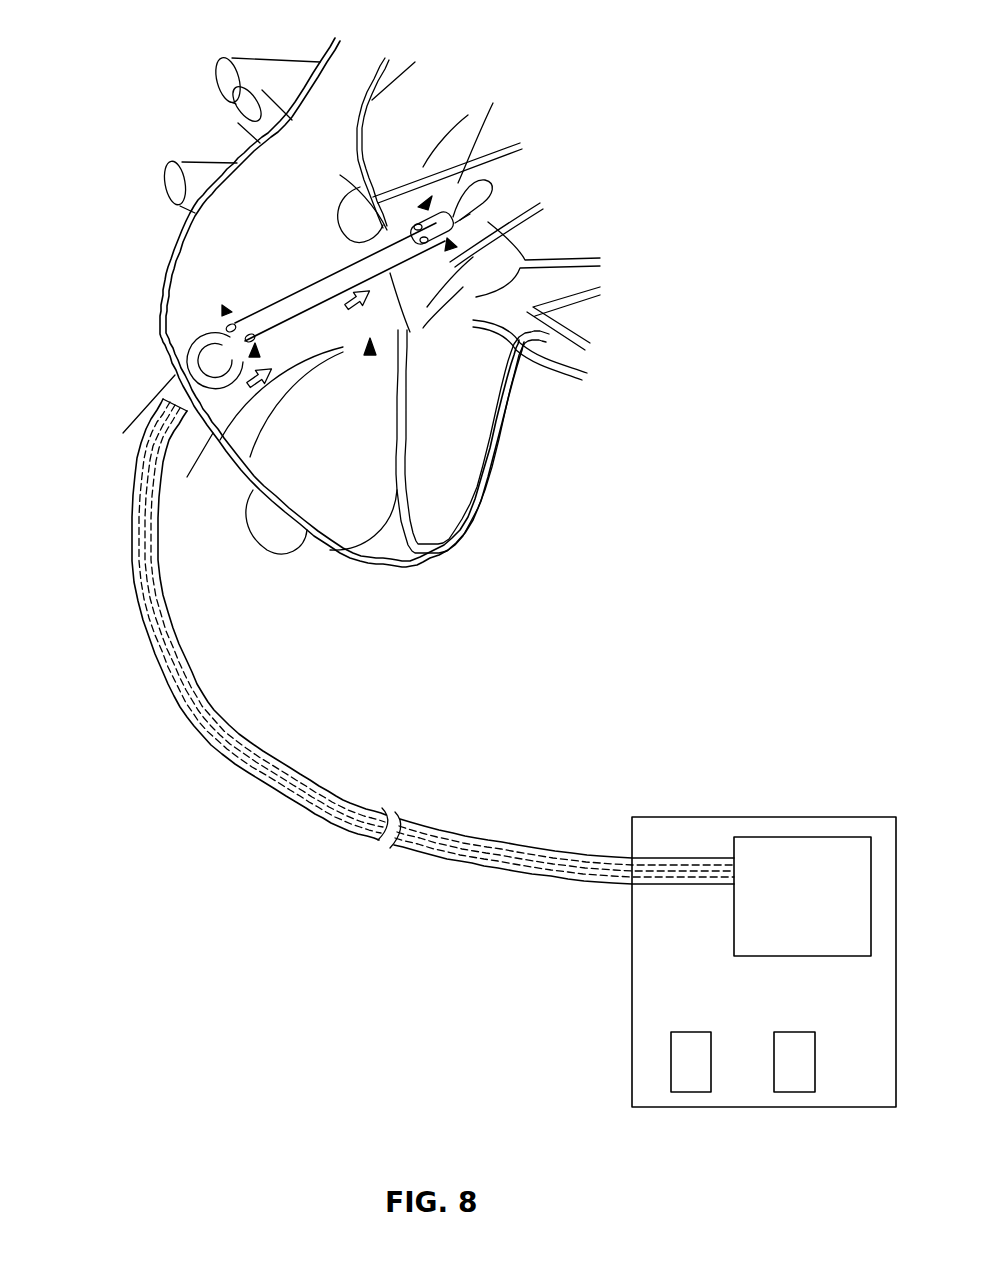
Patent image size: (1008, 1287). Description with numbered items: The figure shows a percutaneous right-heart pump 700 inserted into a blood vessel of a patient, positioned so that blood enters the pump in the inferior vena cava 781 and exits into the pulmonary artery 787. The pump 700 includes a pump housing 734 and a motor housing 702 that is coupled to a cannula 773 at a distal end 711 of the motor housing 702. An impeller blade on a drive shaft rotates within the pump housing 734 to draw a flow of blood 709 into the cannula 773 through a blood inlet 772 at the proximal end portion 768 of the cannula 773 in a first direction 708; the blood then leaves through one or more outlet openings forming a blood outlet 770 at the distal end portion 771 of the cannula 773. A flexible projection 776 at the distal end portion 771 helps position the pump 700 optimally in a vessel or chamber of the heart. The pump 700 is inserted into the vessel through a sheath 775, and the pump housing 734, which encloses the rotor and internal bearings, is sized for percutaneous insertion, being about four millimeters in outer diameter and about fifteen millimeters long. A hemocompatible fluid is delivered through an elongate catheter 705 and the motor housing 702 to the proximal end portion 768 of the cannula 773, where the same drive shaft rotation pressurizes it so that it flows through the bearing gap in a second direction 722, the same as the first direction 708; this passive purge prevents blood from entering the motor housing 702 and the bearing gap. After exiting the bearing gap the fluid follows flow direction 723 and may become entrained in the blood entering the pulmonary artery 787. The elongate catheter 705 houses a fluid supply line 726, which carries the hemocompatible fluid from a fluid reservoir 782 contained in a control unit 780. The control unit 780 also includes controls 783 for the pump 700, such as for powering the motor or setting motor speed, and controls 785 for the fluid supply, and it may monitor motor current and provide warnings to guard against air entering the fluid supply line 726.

The percutaneous right-heart pump 700 is at (370, 350).
The motor housing 702 is at (197, 325).
The elongate catheter 705 is at (170, 405).
The first direction 708 is at (395, 275).
The flow of blood 709 is at (412, 223).
The distal end 711 is at (220, 327).
The second direction 722 is at (268, 390).
The flow direction 723 is at (430, 268).
The fluid supply line 726 is at (287, 770).
The pump housing 734 is at (245, 300).
The proximal end portion 768 is at (240, 320).
The blood outlet 770 is at (360, 187).
The distal end portion 771 is at (470, 220).
The blood inlet 772 is at (263, 377).
The cannula 773 is at (353, 217).
The sheath 775 is at (210, 727).
The flexible projection 776 is at (493, 177).
The control unit 780 is at (643, 960).
The inferior vena cava 781 is at (143, 430).
The fluid reservoir 782 is at (803, 850).
The controls for the pump 783 is at (697, 1080).
The controls for the fluid supply 785 is at (793, 1080).
The pulmonary artery 787 is at (493, 103).